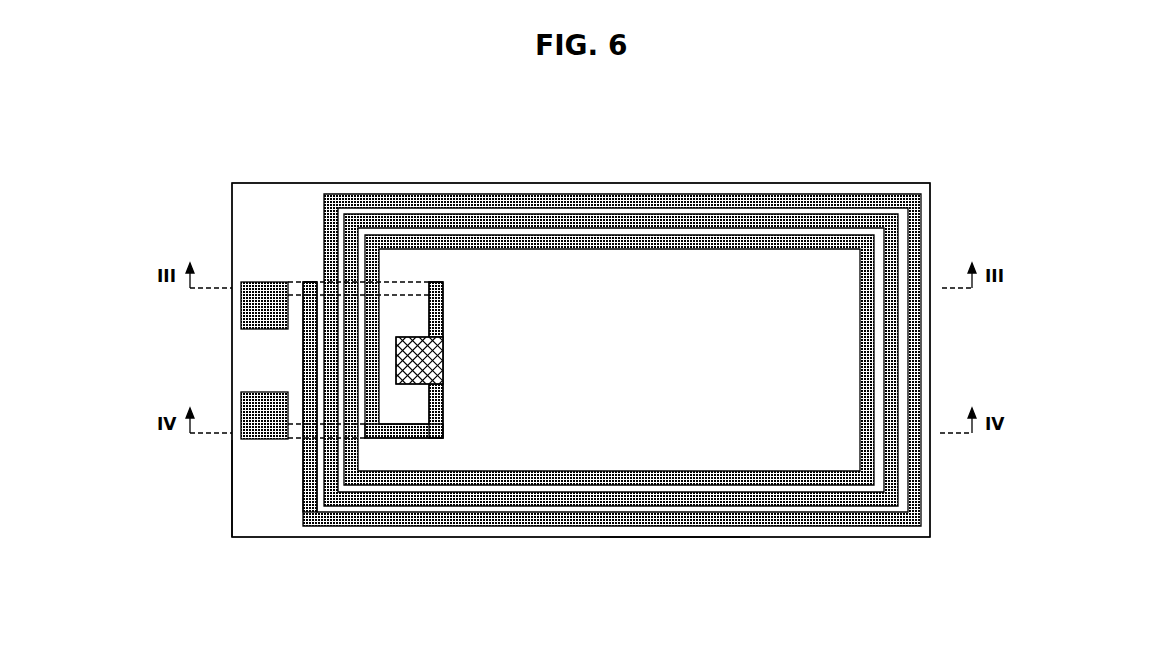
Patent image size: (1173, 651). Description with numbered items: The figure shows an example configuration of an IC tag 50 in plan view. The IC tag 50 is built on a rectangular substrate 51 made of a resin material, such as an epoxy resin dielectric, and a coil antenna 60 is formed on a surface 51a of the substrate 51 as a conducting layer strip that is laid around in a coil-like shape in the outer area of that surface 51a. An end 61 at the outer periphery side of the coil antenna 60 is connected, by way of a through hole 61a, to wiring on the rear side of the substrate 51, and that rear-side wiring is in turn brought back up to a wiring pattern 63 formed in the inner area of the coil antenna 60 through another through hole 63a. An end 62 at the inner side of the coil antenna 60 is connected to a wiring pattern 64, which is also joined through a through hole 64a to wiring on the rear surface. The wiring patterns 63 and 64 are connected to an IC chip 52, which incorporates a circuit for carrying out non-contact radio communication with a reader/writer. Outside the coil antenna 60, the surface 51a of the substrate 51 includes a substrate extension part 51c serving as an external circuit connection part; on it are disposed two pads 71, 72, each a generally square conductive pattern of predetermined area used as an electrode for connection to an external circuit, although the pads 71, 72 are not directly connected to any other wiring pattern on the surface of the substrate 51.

The IC tag 50 is at (750, 537).
The substrate 51 is at (537, 537).
The surface 51a is at (672, 537).
The substrate extension part 51c is at (269, 486).
The IC chip 52 is at (443, 362).
The coil antenna 60 is at (695, 194).
The end at the outer periphery side of the coil antenna 61 is at (310, 282).
The through hole 61a is at (303, 283).
The end at the inner side of the coil antenna 62 is at (373, 428).
The wiring pattern 63 is at (443, 321).
The through hole 63a is at (437, 282).
The wiring pattern 64 is at (443, 414).
The through hole 64a is at (437, 438).
The pad 71 is at (241, 305).
The pad 72 is at (241, 405).